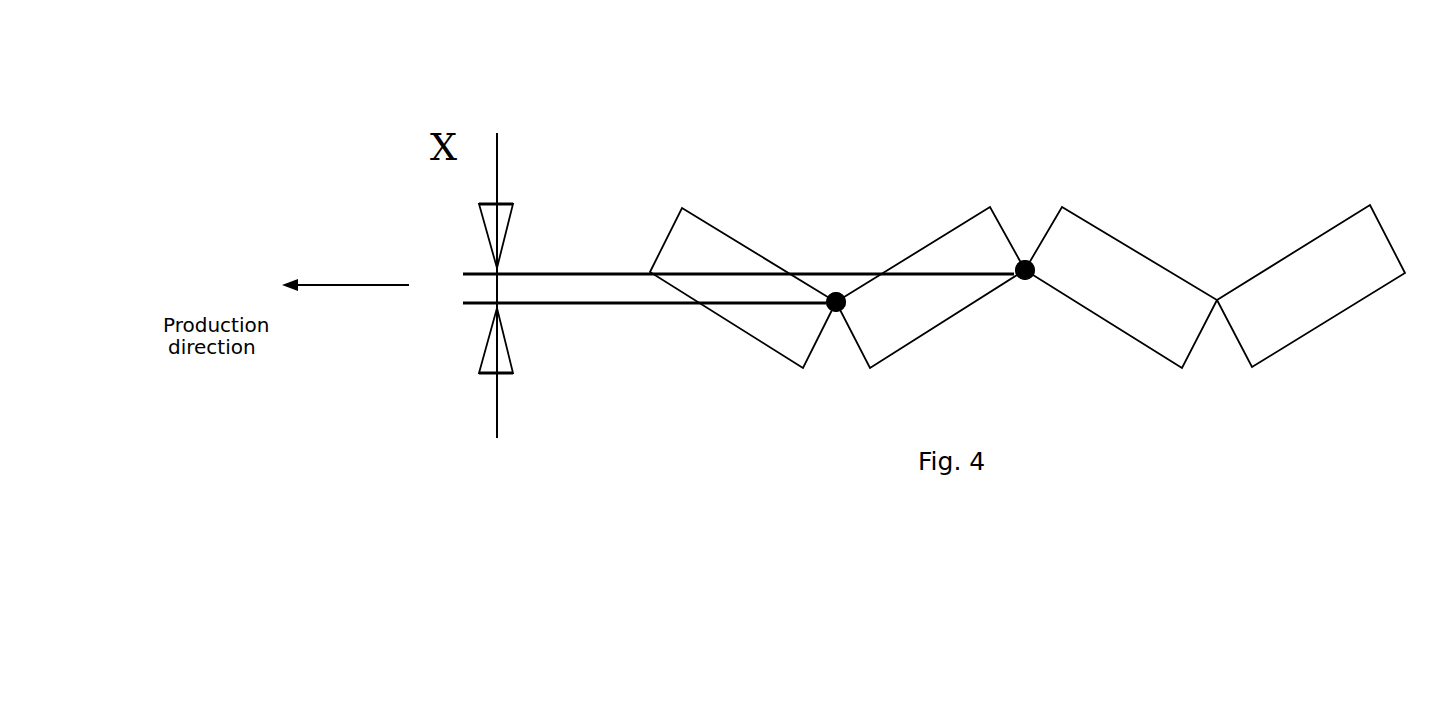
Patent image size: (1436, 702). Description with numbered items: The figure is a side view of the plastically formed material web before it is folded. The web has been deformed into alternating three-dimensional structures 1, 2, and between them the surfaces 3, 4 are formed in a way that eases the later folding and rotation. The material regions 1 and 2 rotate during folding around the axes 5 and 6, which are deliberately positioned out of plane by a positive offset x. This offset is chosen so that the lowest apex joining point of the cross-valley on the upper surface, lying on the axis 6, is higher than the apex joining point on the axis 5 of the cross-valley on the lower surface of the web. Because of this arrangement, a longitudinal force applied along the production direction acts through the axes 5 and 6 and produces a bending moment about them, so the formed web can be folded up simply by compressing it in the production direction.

The 3D-structure 1 is at (760, 222).
The 3D-structure 2 is at (907, 223).
The surface 3 is at (1027, 165).
The surface 4 is at (834, 417).
The axis 5 is at (815, 317).
The axis 6 is at (1010, 290).